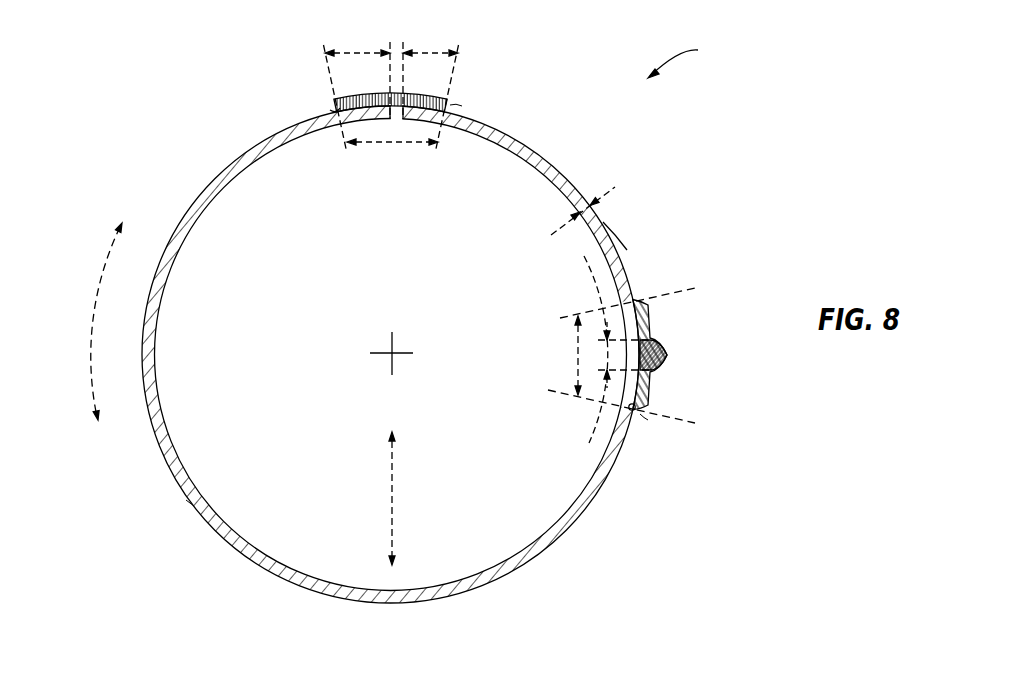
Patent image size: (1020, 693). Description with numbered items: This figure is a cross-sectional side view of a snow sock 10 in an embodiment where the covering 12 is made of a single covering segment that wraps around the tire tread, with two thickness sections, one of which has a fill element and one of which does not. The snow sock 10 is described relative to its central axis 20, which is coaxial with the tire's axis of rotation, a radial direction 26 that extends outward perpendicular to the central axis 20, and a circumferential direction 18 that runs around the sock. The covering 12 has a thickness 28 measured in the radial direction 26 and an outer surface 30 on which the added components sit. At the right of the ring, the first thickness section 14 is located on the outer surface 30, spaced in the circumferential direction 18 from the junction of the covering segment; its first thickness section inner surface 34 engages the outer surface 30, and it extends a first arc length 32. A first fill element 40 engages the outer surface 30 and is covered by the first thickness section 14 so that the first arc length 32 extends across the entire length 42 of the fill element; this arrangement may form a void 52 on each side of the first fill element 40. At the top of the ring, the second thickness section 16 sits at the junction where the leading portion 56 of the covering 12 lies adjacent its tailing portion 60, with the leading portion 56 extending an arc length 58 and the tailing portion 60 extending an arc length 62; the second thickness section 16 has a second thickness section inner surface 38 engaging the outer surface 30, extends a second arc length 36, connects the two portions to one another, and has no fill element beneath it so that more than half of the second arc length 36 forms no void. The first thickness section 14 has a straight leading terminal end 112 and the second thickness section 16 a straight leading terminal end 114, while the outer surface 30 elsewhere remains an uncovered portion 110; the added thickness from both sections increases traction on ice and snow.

The snow sock 10 is at (689, 58).
The covering 12 is at (220, 176).
The first thickness section 14 is at (668, 366).
The second thickness section 16 is at (441, 97).
The circumferential direction 18 is at (91, 330).
The central axis 20 is at (402, 353).
The radial direction 26 is at (392, 500).
The thickness 28 is at (612, 186).
The outer surface 30 is at (620, 231).
The first arc length 32 is at (578, 345).
The first thickness section inner surface 34 is at (635, 412).
The second arc length 36 is at (403, 142).
The second thickness section inner surface 38 is at (330, 110).
The first fill element 40 is at (664, 353).
The length 42 is at (606, 322).
The void 52 is at (647, 340).
The leading portion 56 is at (368, 120).
The arc length 58 is at (360, 52).
The tailing portion 60 is at (415, 120).
The arc length 62 is at (432, 52).
The uncovered portion 110 is at (189, 502).
The leading terminal end 112 is at (645, 418).
The leading terminal end 114 is at (450, 105).